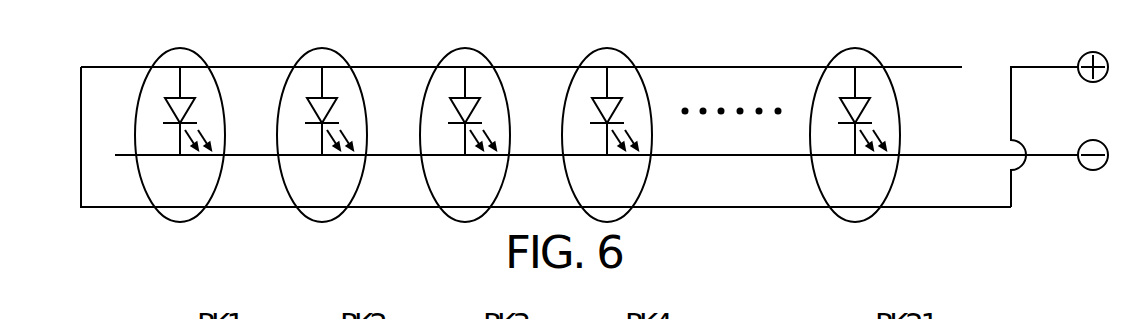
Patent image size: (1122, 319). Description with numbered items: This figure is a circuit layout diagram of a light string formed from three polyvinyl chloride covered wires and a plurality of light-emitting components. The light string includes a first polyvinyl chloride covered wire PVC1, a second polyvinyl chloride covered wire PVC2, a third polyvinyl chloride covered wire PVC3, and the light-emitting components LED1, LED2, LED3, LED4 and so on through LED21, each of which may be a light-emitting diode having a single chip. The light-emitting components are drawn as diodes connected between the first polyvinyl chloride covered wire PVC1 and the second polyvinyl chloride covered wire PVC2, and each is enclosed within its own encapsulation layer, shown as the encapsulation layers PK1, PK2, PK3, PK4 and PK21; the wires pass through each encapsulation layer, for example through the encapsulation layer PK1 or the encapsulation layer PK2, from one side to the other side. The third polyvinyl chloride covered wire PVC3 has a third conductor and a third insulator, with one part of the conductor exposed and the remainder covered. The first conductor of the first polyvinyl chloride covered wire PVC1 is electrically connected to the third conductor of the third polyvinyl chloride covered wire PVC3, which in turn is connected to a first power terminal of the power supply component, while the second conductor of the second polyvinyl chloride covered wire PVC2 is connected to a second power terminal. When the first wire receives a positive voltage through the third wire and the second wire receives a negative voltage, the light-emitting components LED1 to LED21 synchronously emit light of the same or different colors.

The light-emitting component LED1 is at (173, 105).
The light-emitting component LED2 is at (315, 105).
The light-emitting component LED3 is at (458, 105).
The light-emitting component LED4 is at (600, 105).
The light-emitting component LED21 is at (848, 105).
The encapsulation layer PK1 is at (202, 53).
The encapsulation layer PK2 is at (344, 53).
The third package PK3 is at (487, 53).
The fourth package PK4 is at (629, 53).
The twenty-first package PK21 is at (877, 53).
The first polyvinyl chloride covered wire PVC1 is at (722, 65).
The second polyvinyl chloride covered wire PVC2 is at (957, 152).
The third polyvinyl chloride covered wire PVC3 is at (955, 210).